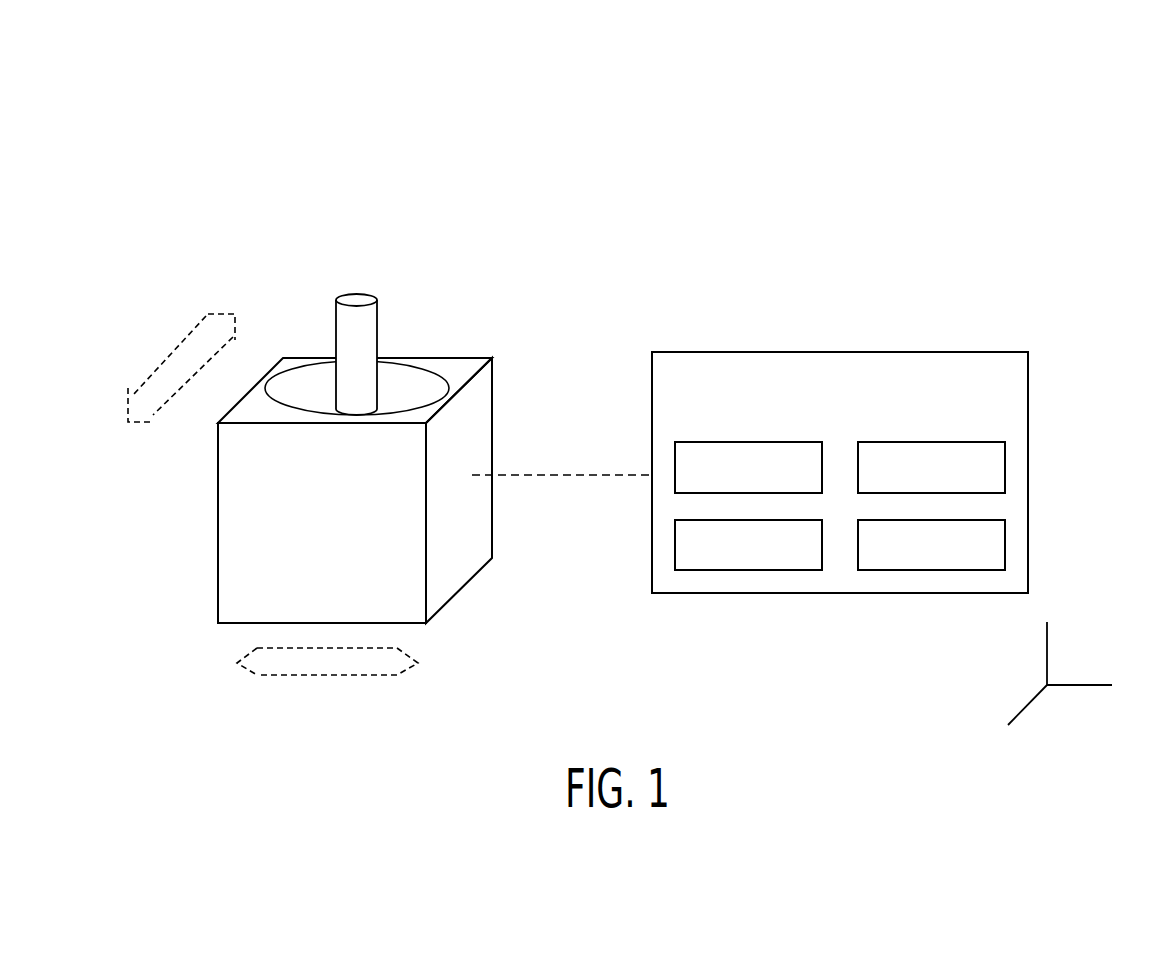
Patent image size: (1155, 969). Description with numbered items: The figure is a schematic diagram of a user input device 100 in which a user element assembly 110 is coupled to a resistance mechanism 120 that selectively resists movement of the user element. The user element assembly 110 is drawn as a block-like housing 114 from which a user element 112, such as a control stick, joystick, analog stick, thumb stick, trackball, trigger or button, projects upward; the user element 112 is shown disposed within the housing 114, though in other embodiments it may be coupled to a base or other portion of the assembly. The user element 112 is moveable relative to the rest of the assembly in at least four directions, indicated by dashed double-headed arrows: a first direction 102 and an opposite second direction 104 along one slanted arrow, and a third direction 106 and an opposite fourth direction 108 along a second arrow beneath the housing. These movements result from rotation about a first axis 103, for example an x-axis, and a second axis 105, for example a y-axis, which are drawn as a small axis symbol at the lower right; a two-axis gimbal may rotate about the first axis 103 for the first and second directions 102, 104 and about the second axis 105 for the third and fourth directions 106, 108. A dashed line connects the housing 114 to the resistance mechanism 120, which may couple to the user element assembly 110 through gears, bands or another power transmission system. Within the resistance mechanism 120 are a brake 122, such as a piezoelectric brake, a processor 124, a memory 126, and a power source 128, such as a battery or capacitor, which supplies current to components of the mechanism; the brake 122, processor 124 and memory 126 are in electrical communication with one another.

The user input device 100 is at (168, 128).
The first direction 102 is at (171, 366).
The first axis 103 is at (1102, 682).
The second direction 104 is at (128, 425).
The second axis 105 is at (1010, 717).
The third direction 106 is at (418, 668).
The fourth direction 108 is at (237, 668).
The user element assembly 110 is at (178, 590).
The user element 112 is at (363, 330).
The housing 114 is at (458, 568).
The resistance mechanism 120 is at (858, 411).
The brake 122 is at (764, 481).
The processor 124 is at (948, 481).
The memory 126 is at (764, 560).
The power source 128 is at (948, 560).